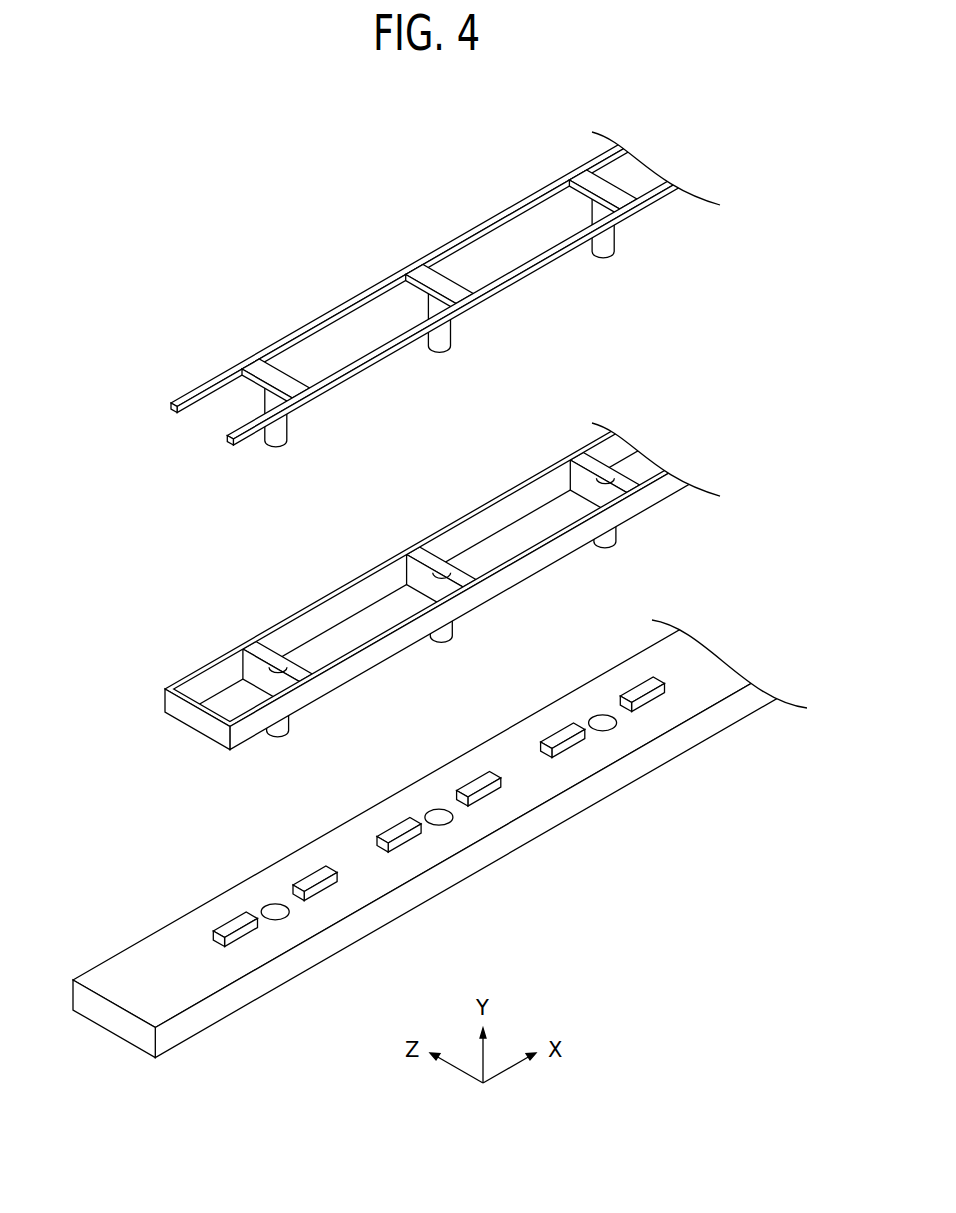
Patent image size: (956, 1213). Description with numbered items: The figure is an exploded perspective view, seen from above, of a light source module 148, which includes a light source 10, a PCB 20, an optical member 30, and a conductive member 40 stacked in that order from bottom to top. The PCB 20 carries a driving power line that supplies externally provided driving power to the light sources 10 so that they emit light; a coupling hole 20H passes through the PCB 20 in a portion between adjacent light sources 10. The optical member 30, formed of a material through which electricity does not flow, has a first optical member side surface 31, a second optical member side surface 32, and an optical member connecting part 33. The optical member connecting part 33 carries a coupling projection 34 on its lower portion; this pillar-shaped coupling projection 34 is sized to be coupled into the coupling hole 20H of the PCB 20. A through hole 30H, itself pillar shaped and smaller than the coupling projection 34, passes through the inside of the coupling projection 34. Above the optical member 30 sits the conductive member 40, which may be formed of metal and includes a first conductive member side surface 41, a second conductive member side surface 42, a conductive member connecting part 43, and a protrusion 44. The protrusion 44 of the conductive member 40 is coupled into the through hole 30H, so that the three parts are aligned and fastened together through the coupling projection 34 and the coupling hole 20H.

The light source module 148 is at (108, 164).
The light source 10 is at (557, 737).
The PCB 20 is at (504, 794).
The coupling hole 20H is at (438, 812).
The optical member 30 is at (185, 598).
The through hole 30H is at (439, 571).
The first optical member side surface 31 is at (250, 735).
The second optical member side surface 32 is at (205, 666).
The optical member connecting part 33 is at (258, 644).
The coupling projection 34 is at (448, 633).
The conductive member 40 is at (165, 304).
The first conductive member side surface 41 is at (250, 437).
The second conductive member side surface 42 is at (208, 382).
The conductive member connecting part 43 is at (273, 374).
The protrusion 44 is at (284, 431).